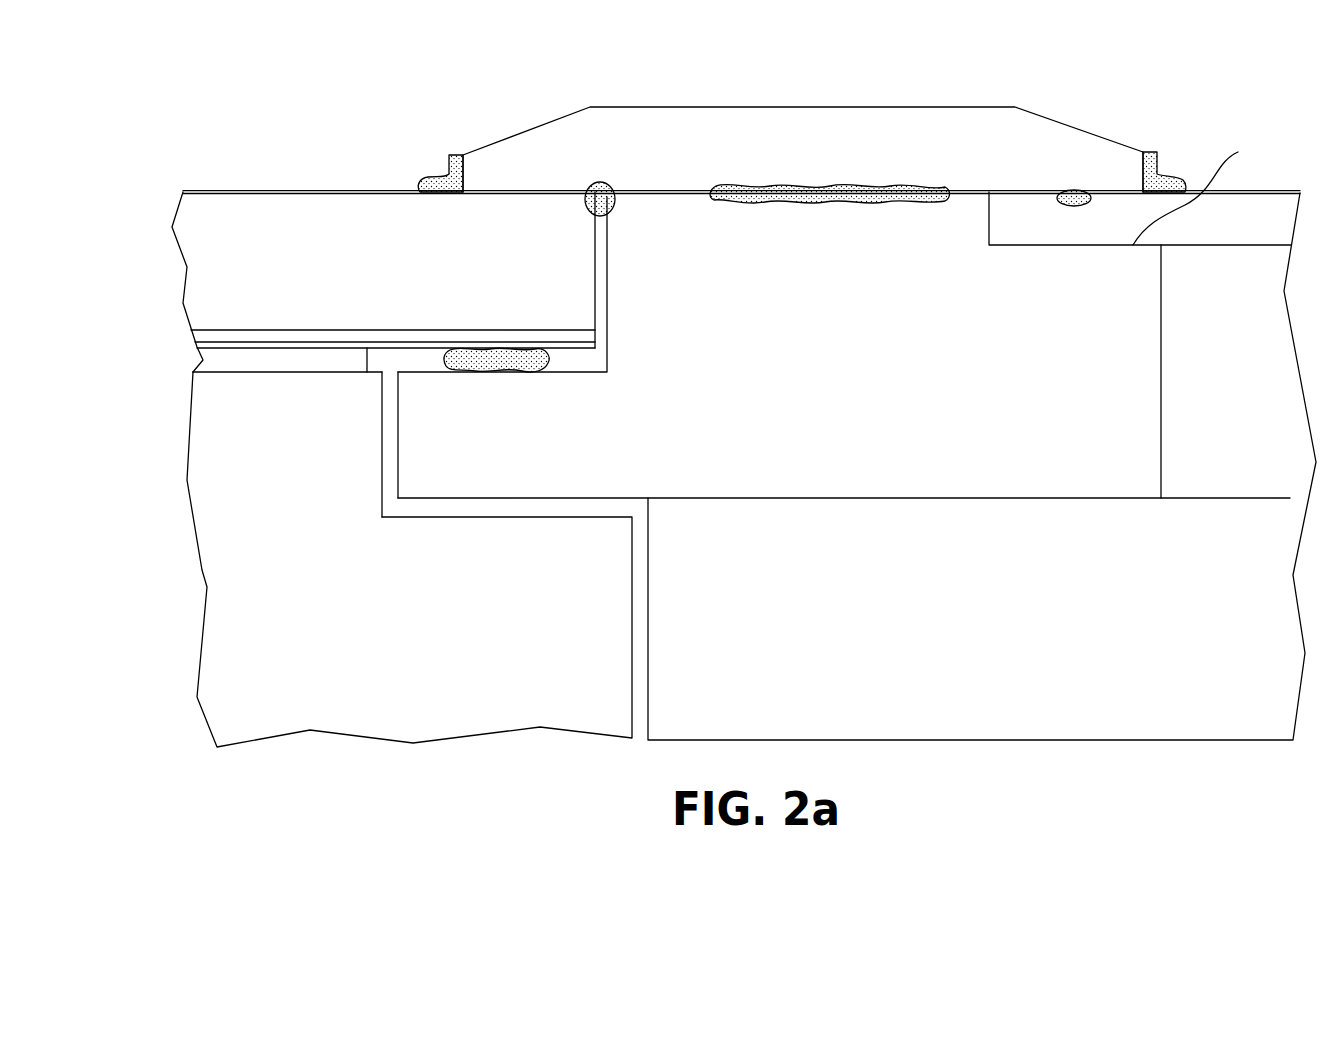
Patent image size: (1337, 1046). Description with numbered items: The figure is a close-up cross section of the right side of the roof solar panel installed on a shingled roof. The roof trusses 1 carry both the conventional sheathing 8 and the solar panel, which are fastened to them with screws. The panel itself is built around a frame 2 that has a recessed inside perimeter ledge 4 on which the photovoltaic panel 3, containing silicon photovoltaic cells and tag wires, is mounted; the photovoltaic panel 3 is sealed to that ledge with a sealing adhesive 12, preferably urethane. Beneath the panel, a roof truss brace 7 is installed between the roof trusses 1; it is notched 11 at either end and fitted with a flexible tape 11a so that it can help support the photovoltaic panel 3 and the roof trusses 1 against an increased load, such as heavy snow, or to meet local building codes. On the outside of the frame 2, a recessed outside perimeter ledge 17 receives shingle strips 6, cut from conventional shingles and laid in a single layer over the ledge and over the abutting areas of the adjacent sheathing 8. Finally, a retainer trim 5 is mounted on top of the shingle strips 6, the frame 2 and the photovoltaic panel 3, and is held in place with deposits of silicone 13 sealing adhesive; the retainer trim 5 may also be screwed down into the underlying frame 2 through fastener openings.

The roof truss 1 is at (982, 466).
The frame 2 is at (844, 417).
The photovoltaic panel 3 is at (252, 190).
The recessed inside perimeter ledge 4 is at (427, 372).
The retainer trim 5 is at (848, 107).
The shingle strip 6 is at (1140, 218).
The roof truss brace 7 is at (409, 559).
The sheathing 8 is at (1194, 371).
The notch 11 is at (428, 517).
The flexible tape 11a is at (227, 358).
The sealing adhesive 12 is at (467, 360).
The silicone 13 is at (447, 178).
The recessed outside perimeter ledge 17 is at (1205, 190).